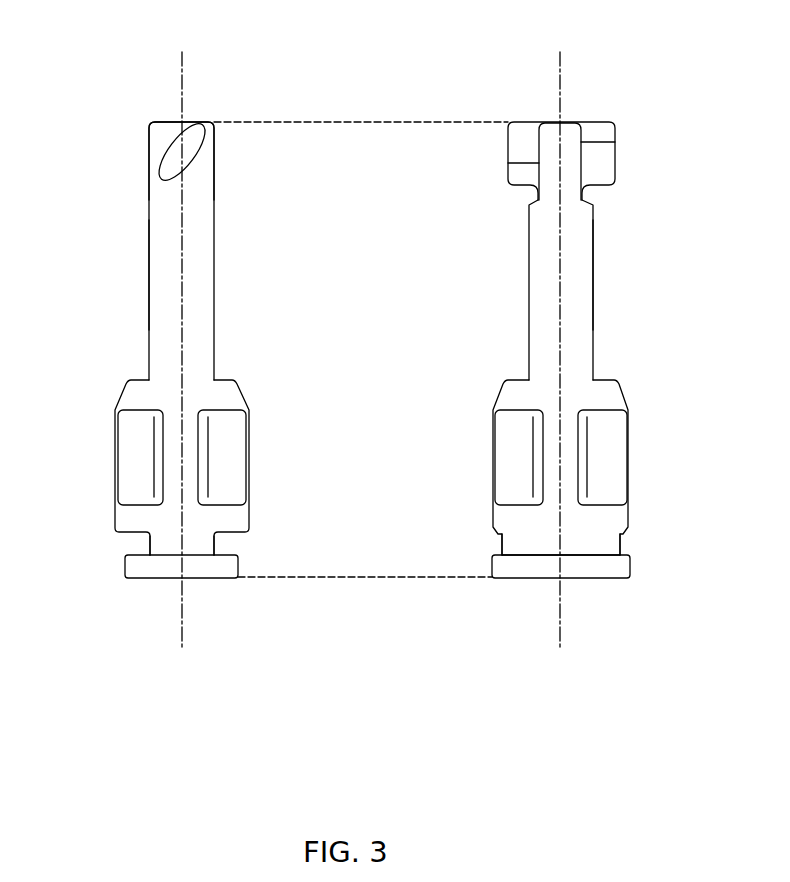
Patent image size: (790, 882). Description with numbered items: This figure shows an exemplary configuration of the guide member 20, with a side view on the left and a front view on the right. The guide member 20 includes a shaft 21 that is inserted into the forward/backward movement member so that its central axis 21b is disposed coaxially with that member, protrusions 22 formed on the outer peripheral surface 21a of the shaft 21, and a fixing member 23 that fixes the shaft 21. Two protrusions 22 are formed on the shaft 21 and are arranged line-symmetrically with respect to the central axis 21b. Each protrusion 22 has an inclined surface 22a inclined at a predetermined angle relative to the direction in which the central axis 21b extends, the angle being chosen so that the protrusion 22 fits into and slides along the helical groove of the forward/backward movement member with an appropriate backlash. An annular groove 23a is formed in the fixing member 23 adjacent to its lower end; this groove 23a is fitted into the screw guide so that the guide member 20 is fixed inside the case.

The guide member 20 is at (194, 30).
The shaft 21 is at (149, 238).
The outer peripheral surface 21a is at (147, 276).
The central axis 21b is at (181, 612).
The protrusion 22 is at (180, 144).
The inclined surface 22a is at (161, 160).
The fixing member 23 is at (115, 456).
The groove 23a is at (150, 540).